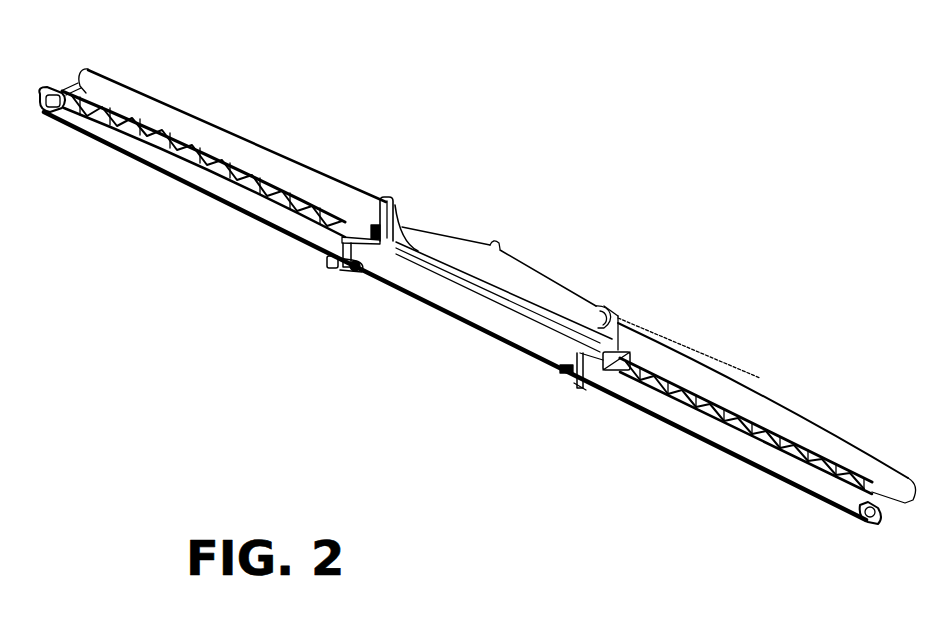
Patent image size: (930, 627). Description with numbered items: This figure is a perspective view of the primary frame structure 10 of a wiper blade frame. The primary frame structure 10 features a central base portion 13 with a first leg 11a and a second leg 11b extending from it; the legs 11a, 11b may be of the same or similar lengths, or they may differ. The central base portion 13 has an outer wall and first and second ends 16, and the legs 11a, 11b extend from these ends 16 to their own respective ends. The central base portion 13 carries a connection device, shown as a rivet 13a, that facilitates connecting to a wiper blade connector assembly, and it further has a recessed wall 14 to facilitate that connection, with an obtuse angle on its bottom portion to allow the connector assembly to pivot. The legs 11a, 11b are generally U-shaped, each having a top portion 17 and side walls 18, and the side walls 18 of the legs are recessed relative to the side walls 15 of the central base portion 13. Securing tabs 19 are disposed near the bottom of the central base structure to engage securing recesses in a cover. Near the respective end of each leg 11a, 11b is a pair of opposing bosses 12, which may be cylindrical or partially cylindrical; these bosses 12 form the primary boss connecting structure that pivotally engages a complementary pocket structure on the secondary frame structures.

The primary frame structure 10 is at (473, 292).
The first leg 11a is at (296, 150).
The second leg 11b is at (760, 380).
The opposing bosses 12 is at (76, 85).
The central base portion 13 is at (483, 202).
The rivet 13a is at (497, 243).
The recessed wall 14 is at (540, 287).
The side walls of the central base portion 15 is at (508, 292).
The first and second ends 16 is at (391, 201).
The top portion 17 is at (150, 144).
The side walls 18 is at (212, 188).
The securing tabs 19 is at (381, 242).